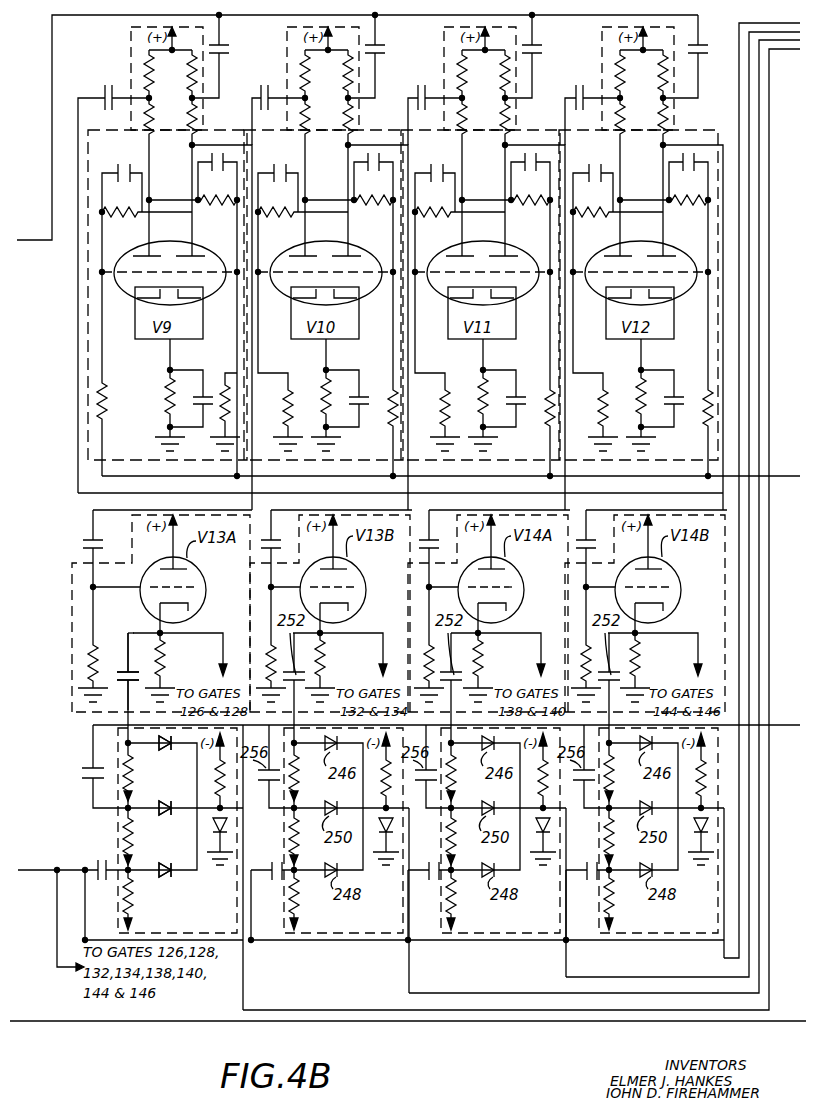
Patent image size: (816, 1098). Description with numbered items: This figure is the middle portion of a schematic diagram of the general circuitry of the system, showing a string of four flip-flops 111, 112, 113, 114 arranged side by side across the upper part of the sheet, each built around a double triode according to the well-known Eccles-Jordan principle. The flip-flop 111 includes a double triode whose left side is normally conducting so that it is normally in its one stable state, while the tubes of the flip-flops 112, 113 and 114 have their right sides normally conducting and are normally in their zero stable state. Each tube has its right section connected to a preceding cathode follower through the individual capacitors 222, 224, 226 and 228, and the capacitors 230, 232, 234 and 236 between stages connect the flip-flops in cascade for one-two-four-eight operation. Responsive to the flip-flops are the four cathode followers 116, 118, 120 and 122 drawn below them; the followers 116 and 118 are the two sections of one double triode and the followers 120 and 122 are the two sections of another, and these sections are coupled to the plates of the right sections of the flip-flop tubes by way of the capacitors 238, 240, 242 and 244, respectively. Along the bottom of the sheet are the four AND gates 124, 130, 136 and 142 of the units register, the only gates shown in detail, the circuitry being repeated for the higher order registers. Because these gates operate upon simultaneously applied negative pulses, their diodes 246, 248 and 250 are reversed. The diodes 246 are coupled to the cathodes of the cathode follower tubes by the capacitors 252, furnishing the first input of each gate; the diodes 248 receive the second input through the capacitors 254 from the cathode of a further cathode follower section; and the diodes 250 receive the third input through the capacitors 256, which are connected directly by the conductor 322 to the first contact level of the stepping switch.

The flip-flop 111 is at (157, 466).
The flip-flop 112 is at (323, 312).
The flip-flop 113 is at (480, 312).
The flip-flop 114 is at (638, 312).
The cathode follower 116 is at (123, 524).
The cathode follower 118 is at (330, 602).
The cathode follower 120 is at (488, 602).
The cathode follower 122 is at (645, 602).
The AND gate 124 is at (108, 817).
The AND gate 130 is at (343, 851).
The AND gate 136 is at (500, 851).
The AND gate 142 is at (657, 851).
The capacitor 222 is at (228, 51).
The capacitor 224 is at (391, 56).
The capacitor 226 is at (548, 56).
The capacitor 228 is at (703, 56).
The capacitor 230 is at (263, 104).
The capacitor 232 is at (420, 104).
The capacitor 234 is at (578, 104).
The capacitor 236 is at (108, 84).
The capacitor 238 is at (100, 549).
The capacitor 240 is at (334, 606).
The capacitor 242 is at (492, 606).
The capacitor 244 is at (649, 606).
The diode 246 is at (164, 752).
The diode 248 is at (170, 877).
The diode 250 is at (163, 816).
The capacitor 252 is at (124, 670).
The capacitor 254 is at (100, 857).
The capacitor 256 is at (86, 760).
The conductor 322 is at (781, 725).